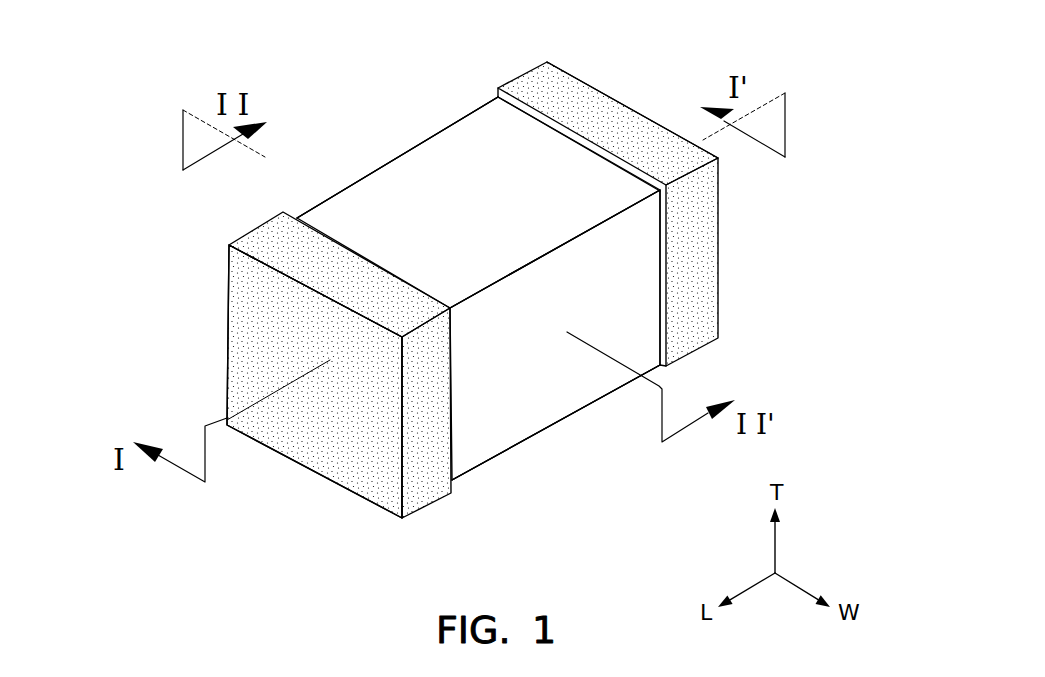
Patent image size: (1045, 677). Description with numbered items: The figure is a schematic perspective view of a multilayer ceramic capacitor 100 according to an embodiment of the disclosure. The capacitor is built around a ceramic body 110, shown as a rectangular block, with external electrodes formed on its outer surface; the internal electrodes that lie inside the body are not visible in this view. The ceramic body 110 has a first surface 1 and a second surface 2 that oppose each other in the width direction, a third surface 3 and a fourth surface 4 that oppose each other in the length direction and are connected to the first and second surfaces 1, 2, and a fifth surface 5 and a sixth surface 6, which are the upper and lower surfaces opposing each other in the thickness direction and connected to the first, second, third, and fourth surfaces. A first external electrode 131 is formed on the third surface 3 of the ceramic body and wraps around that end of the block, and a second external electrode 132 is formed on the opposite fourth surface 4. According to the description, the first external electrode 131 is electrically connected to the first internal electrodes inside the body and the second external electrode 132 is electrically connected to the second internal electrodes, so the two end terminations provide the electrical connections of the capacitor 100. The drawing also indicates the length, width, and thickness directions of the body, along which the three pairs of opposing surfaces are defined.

The multilayer ceramic capacitor 100 is at (457, 261).
The ceramic body 110 is at (407, 167).
The first external electrode 131 is at (263, 234).
The second external electrode 132 is at (598, 107).
The first surface 1 is at (341, 174).
The second surface 2 is at (646, 285).
The third surface 3 is at (343, 455).
The fourth surface 4 is at (641, 101).
The fifth surface 5 is at (475, 144).
The sixth surface 6 is at (517, 459).